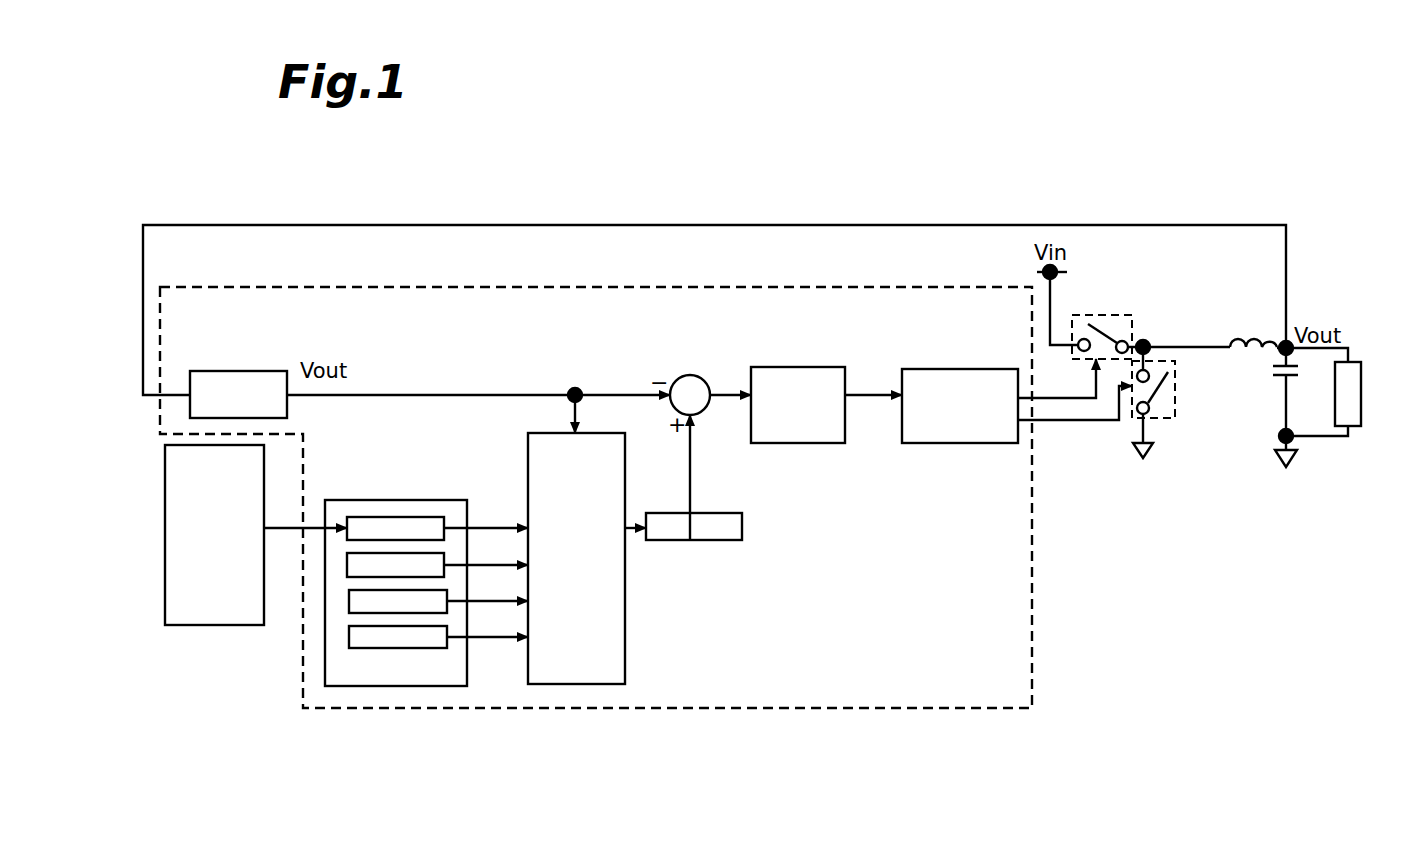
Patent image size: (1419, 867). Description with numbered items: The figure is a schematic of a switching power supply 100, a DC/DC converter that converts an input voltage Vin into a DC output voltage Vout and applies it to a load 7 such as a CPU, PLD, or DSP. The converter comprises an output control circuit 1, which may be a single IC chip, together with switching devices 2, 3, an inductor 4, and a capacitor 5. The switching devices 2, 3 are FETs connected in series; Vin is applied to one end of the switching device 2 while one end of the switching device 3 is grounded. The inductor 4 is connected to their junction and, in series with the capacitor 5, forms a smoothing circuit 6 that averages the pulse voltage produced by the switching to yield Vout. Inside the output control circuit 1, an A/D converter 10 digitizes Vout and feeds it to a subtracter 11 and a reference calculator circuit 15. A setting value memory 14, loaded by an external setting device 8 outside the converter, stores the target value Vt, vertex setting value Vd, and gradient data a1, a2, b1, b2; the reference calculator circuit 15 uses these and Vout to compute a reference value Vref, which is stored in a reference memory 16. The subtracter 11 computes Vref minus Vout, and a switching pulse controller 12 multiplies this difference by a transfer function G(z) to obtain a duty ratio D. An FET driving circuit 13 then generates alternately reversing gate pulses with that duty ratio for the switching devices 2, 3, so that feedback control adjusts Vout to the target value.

The switching power supply 100 is at (840, 106).
The output control circuit 1 is at (1035, 624).
The switching device 2 is at (1112, 313).
The switching device 3 is at (1175, 377).
The inductor 4 is at (1238, 372).
The capacitor 5 is at (1270, 402).
The smoothing circuit 6 is at (1251, 423).
The load 7 is at (1363, 392).
The external setting device 8 is at (230, 625).
The A/D converter 10 is at (246, 371).
The subtracter 11 is at (690, 375).
The switching pulse controller 12 is at (806, 443).
The FET driving circuit 13 is at (960, 443).
The setting value memory 14 is at (420, 686).
The reference calculator circuit 15 is at (558, 684).
The reference memory 16 is at (672, 540).